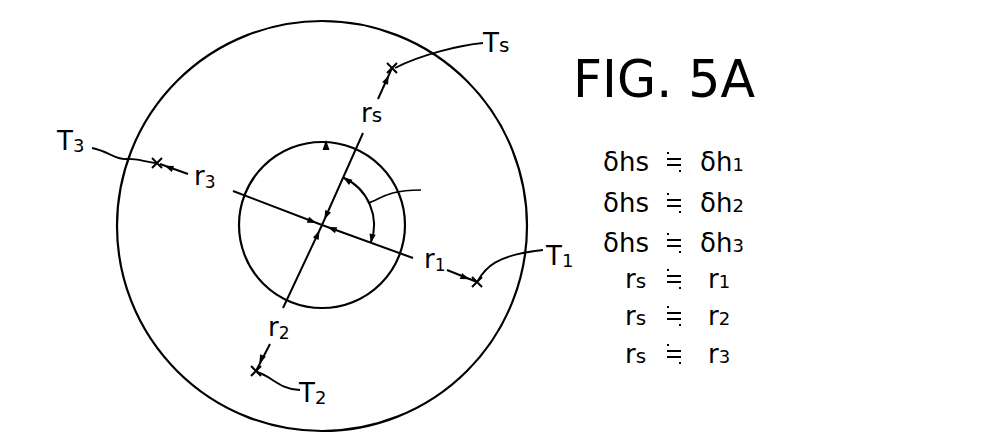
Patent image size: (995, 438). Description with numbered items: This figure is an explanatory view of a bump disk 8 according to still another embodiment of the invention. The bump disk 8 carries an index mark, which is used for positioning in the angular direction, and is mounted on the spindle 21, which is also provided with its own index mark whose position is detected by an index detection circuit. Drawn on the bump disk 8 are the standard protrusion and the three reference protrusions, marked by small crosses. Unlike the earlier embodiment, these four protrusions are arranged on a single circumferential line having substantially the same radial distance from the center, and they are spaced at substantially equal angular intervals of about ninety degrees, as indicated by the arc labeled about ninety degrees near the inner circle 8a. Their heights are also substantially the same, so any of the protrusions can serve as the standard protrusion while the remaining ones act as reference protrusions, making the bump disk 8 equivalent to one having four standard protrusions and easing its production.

The bump disk 8 is at (198, 98).
The inner circle of disk 8a is at (368, 166).
The spindle 21 is at (395, 228).